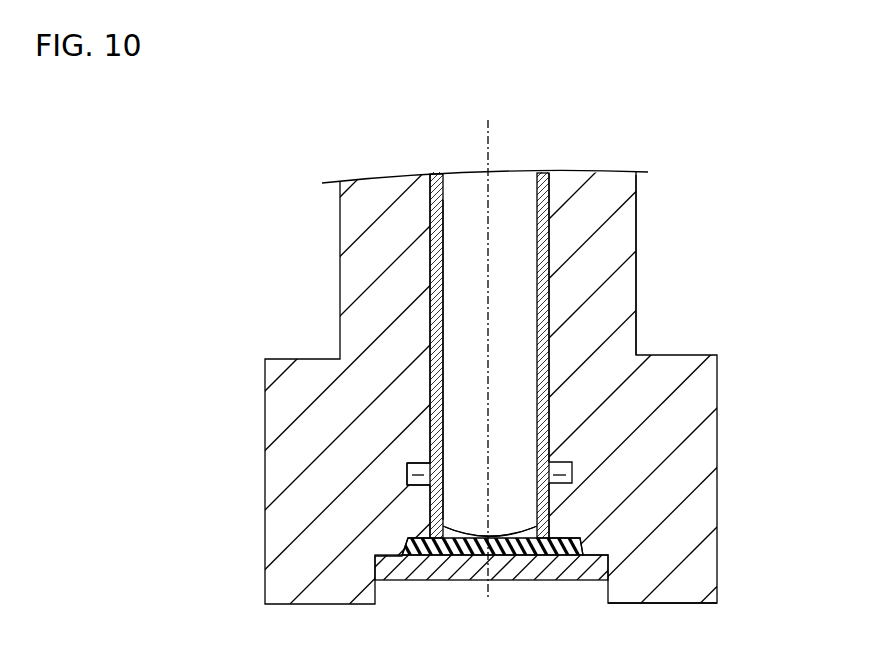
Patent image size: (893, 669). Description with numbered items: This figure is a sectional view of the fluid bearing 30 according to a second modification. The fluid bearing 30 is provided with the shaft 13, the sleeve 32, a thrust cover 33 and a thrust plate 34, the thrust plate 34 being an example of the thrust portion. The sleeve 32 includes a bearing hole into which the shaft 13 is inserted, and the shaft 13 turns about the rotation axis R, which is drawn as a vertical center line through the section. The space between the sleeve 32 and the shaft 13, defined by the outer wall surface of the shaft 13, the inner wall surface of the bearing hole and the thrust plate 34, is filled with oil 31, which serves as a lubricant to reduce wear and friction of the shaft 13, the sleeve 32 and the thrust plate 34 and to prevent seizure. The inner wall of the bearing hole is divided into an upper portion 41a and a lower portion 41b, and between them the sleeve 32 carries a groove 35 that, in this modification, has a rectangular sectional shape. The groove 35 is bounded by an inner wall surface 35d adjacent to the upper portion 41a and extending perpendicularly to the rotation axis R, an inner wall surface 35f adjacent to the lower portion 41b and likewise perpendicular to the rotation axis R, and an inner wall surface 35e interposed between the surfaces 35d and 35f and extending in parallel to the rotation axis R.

The fluid bearing 30 is at (653, 181).
The shaft 13 is at (530, 238).
The oil 31 is at (545, 275).
The sleeve 32 is at (683, 592).
The thrust cover 33 is at (513, 558).
The thrust plate 34 is at (449, 582).
The groove 35 is at (573, 469).
The inner wall surface 35d is at (407, 463).
The inner wall surface 35e is at (407, 483).
The inner wall surface 35f is at (407, 480).
The upper portion 41a is at (528, 405).
The lower portion 41b is at (535, 510).
The rotation axis R is at (489, 132).